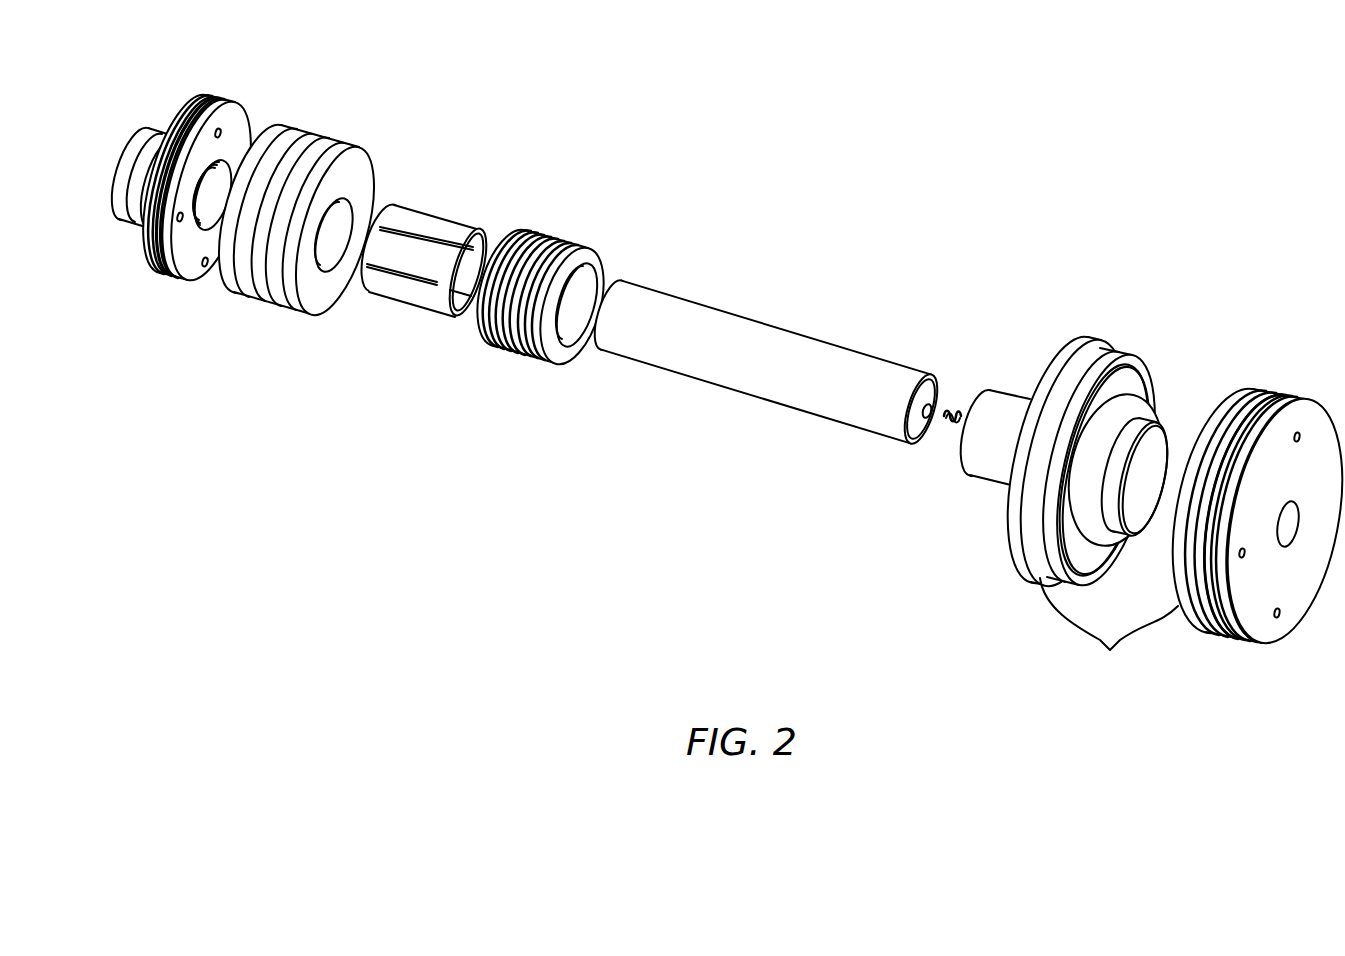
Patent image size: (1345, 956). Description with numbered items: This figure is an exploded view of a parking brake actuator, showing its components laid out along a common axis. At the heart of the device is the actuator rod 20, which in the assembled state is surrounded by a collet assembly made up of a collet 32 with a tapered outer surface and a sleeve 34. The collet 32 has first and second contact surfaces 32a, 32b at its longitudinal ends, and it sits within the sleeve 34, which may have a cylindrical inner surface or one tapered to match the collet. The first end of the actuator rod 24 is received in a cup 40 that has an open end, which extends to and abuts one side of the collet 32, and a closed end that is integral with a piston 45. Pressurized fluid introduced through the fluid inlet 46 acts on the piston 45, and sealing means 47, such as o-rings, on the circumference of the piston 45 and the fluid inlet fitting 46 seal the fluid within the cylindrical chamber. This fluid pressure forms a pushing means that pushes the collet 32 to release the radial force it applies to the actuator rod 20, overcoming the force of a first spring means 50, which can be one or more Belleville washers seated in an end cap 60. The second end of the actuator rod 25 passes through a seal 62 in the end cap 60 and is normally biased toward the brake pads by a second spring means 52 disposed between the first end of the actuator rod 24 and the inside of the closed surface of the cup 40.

The actuator rod 20 is at (770, 392).
The first end of the actuator rod 24 is at (918, 445).
The second end of the actuator rod 25 is at (598, 354).
The collet 32 is at (420, 254).
The first contact surface 32a is at (481, 230).
The second contact surface 32b is at (372, 291).
The sleeve 34 is at (541, 295).
The cup 40 is at (1066, 448).
The piston 45 is at (1118, 360).
The fluid inlet 46 is at (1290, 398).
The sealing means 47 is at (1109, 630).
The first spring means 50 is at (312, 138).
The second spring means 52 is at (955, 406).
The end cap 60 is at (217, 97).
The seal 62 is at (152, 128).